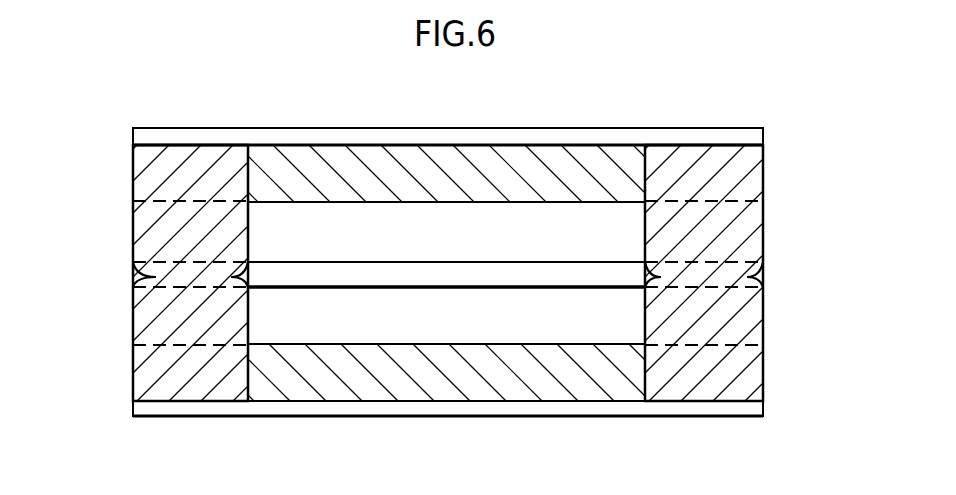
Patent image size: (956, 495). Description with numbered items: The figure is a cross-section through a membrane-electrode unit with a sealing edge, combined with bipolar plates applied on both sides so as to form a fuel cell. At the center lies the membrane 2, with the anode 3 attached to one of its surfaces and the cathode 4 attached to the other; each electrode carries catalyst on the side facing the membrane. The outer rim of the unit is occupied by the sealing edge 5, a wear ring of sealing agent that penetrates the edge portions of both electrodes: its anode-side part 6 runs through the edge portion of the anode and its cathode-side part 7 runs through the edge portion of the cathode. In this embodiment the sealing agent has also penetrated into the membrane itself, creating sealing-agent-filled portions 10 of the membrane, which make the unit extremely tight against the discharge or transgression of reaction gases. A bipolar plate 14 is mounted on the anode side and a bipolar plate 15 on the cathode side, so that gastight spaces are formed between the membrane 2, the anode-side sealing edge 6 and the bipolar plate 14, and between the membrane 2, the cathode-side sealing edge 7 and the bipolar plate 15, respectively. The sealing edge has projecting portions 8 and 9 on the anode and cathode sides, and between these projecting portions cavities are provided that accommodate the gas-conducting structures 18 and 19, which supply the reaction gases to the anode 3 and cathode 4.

The membrane 2 is at (600, 273).
The anode 3 is at (612, 316).
The cathode 4 is at (607, 230).
The sealing edge 5 is at (187, 220).
The anode-side part of the sealing edge 6 is at (152, 318).
The cathode-side part of the sealing edge 7 is at (150, 233).
The projecting portion of the sealing edge 8 is at (165, 367).
The projecting portion of the sealing edge 9 is at (152, 163).
The sealing-agent-filled portion of the membrane 10 is at (150, 277).
The bipolar plate 14 is at (620, 408).
The bipolar plate 15 is at (630, 140).
The gas-conducting structure 18 is at (445, 365).
The gas-conducting structure 19 is at (548, 180).